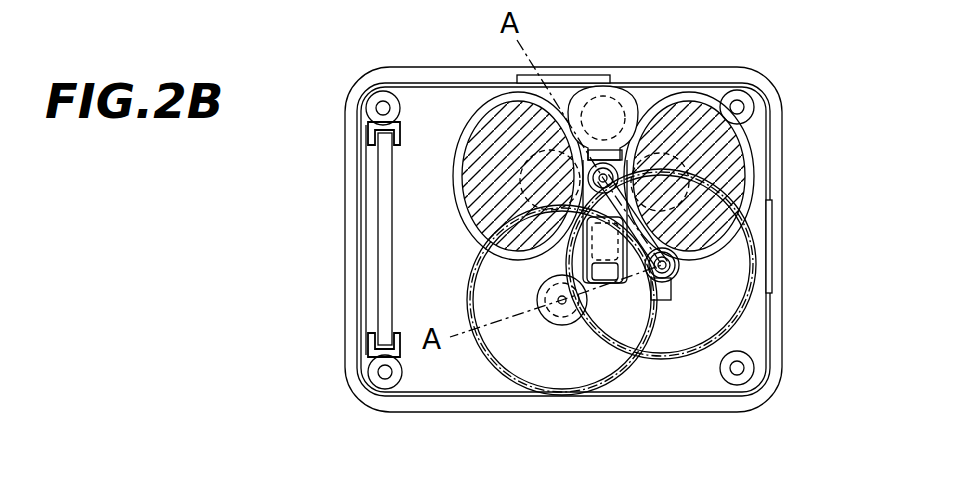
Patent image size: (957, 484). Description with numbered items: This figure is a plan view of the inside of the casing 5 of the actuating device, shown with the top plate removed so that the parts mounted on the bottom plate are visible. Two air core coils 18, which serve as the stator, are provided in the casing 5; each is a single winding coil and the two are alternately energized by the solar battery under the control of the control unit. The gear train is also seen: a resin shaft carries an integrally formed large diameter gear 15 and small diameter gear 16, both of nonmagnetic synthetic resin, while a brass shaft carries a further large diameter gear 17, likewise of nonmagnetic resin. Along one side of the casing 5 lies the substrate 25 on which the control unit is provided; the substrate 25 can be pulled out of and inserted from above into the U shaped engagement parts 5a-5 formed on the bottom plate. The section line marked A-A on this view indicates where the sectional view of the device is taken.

The casing 5 is at (437, 407).
The U shaped engagement parts 5a-5 is at (374, 137).
The substrate 25 is at (385, 223).
The air core coils 18 is at (493, 122).
The large diameter gear 17 is at (559, 372).
The large diameter gear 15 is at (723, 303).
The small diameter gear 16 is at (672, 282).